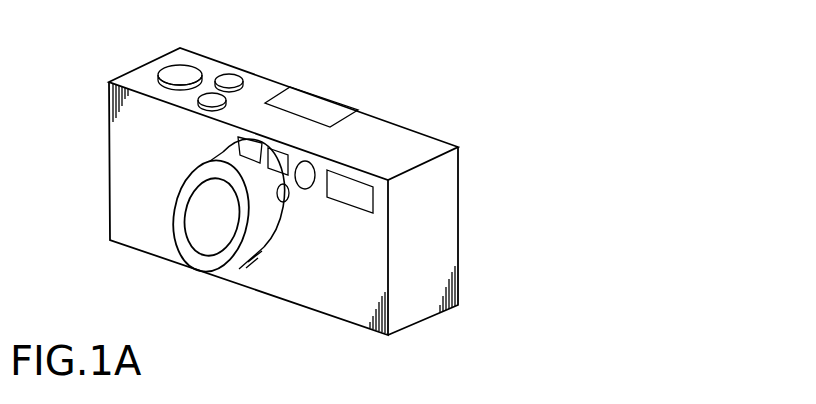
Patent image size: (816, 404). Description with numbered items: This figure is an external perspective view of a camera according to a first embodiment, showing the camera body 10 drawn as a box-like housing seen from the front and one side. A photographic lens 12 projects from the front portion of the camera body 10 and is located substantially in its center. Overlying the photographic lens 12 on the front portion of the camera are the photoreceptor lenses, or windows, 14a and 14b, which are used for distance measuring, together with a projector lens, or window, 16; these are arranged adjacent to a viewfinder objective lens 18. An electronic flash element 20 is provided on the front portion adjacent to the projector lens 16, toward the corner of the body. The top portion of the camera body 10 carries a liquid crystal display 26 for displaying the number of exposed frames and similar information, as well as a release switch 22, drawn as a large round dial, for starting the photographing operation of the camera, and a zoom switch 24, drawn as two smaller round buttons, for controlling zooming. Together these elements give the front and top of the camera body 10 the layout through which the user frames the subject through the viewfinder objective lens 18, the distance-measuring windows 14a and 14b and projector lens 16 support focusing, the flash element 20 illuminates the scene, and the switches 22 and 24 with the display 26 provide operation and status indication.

The camera body 10 is at (447, 208).
The photographic lens 12 is at (203, 239).
The photoreceptor lens (window) for distance measuring 14a is at (245, 151).
The photoreceptor lens (window) for distance measuring 14b is at (283, 153).
The projector lens (window) 16 is at (305, 185).
The viewfinder objective lens 18 is at (278, 205).
The electronic flash element 20 is at (353, 192).
The release switch 22 is at (171, 70).
The zoom switch 24 is at (208, 100).
The liquid crystal display (LCD) 26 is at (336, 109).